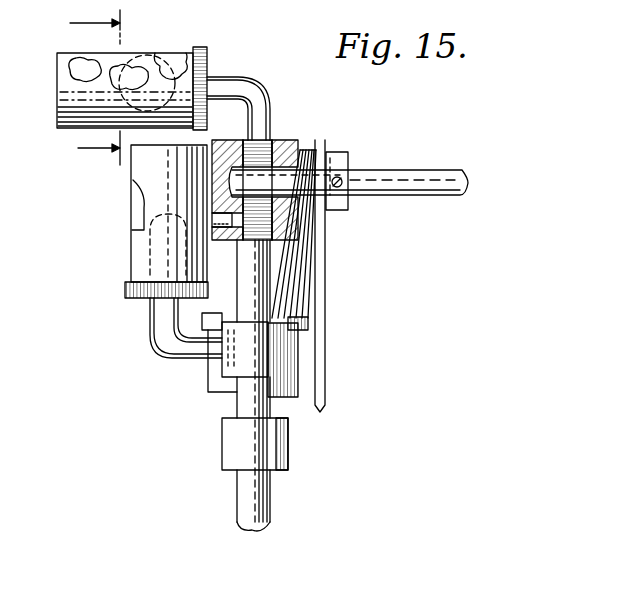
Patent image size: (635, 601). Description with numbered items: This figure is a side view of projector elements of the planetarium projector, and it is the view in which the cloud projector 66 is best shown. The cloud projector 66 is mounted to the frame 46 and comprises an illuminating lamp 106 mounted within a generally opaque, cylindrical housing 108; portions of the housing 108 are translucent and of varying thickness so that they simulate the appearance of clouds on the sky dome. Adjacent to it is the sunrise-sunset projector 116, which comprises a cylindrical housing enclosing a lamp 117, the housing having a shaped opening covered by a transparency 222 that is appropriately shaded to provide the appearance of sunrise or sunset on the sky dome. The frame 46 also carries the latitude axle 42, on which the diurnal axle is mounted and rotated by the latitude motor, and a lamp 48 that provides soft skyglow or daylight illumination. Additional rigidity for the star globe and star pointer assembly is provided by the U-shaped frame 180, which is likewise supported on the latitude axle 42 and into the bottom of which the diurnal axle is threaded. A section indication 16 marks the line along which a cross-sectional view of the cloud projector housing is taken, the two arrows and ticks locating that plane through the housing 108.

The section line 16- 16 is at (113, 93).
The cloud projector 66 is at (57, 88).
The illuminating lamp 106 is at (173, 63).
The cylindrical housing 108 is at (85, 119).
The transparency 222 is at (132, 201).
The sunrise-sunset projector 116 is at (129, 227).
The lamp 117 is at (148, 247).
The latitude axle 42 is at (440, 200).
The lamp 48 is at (307, 298).
The U-shaped frame 180 is at (323, 391).
The frame 46 is at (270, 510).